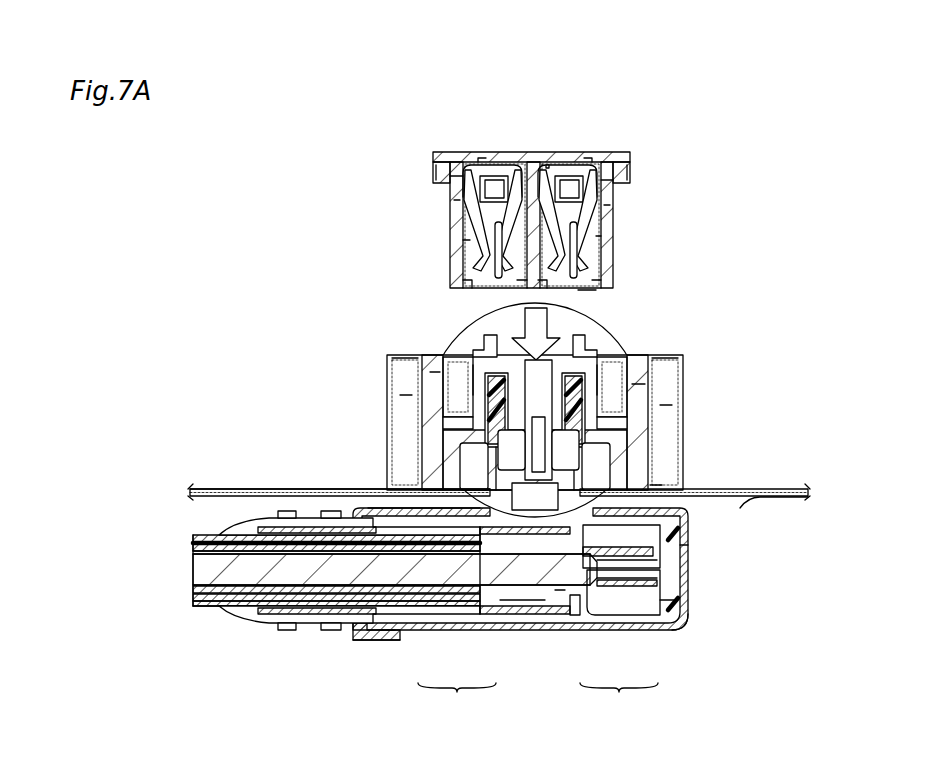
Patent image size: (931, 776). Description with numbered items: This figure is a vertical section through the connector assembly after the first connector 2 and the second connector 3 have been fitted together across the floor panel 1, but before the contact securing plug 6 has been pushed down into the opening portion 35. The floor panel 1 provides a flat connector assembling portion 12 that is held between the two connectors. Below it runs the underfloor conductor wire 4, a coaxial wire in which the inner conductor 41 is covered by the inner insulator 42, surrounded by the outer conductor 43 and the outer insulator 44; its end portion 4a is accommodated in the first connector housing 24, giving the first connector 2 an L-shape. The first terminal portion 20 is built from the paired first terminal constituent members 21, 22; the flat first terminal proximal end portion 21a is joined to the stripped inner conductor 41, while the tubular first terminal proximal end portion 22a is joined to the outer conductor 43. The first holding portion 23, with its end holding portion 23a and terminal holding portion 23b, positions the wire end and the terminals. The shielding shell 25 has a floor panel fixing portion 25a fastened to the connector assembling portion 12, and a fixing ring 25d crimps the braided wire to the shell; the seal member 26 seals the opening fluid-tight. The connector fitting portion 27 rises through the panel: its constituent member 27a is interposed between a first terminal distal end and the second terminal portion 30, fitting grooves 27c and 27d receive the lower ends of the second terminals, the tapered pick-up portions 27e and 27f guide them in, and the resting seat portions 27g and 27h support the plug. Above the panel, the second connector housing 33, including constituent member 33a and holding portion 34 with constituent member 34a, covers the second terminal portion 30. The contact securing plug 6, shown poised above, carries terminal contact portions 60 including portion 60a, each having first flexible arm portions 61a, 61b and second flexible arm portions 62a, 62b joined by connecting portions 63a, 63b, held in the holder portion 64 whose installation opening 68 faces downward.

The floor panel 1 is at (221, 485).
The first connector 2 is at (293, 641).
The second connector 3 is at (755, 320).
The underfloor conductor wire 4 is at (210, 607).
The end portion 4a is at (523, 604).
The contact securing plug 6 is at (606, 128).
The connector assembling portion 12 is at (270, 488).
The first terminal portion 20 is at (457, 695).
The first terminal constituent member 21 is at (600, 588).
The first terminal proximal end portion 21a is at (633, 590).
The first terminal constituent member 22 is at (440, 595).
The first terminal proximal end portion 22a is at (478, 598).
The first holding portion 23 is at (388, 638).
The end holding portion 23a is at (672, 601).
The terminal holding portion 23b is at (682, 551).
The first connector housing 24 is at (688, 624).
The shielding shell 25 is at (376, 511).
The floor panel fixing portion 25a is at (746, 507).
The fixing ring 25d is at (345, 641).
The seal member 26 is at (660, 486).
The connector fitting portion 27 is at (472, 380).
The connector fitting portion constituent member 27a is at (598, 345).
The fitting groove 27c is at (640, 385).
The fitting groove 27d is at (438, 376).
The second terminal constituent member pick-up portion 27e is at (588, 338).
The second terminal constituent member pick-up portion 27f is at (485, 340).
The resting seat portion 27g is at (615, 455).
The resting seat portion 27h is at (455, 450).
The second terminal portion 30 is at (490, 378).
The second connector housing 33 is at (408, 400).
The second connector housing constituent member 33a is at (668, 405).
The holding portion 34 is at (398, 362).
The holding portion constituent member 34a is at (660, 362).
The opening portion 35 is at (580, 345).
The inner conductor 41 is at (200, 570).
The inner insulator 42 is at (200, 590).
The outer conductor 43 is at (203, 598).
The outer insulator 44 is at (205, 606).
The terminal contact portion 60 is at (360, 118).
The terminal contact portion 60a is at (690, 118).
The first flexible arm portion 61a is at (610, 206).
The first flexible arm portion 61b is at (456, 201).
The second flexible arm portion 62a is at (613, 181).
The second flexible arm portion 62b is at (452, 177).
The connecting portion 63a is at (592, 159).
The connecting portion 63b is at (478, 159).
The holder portion 64 is at (494, 152).
The installation opening 68 is at (590, 289).